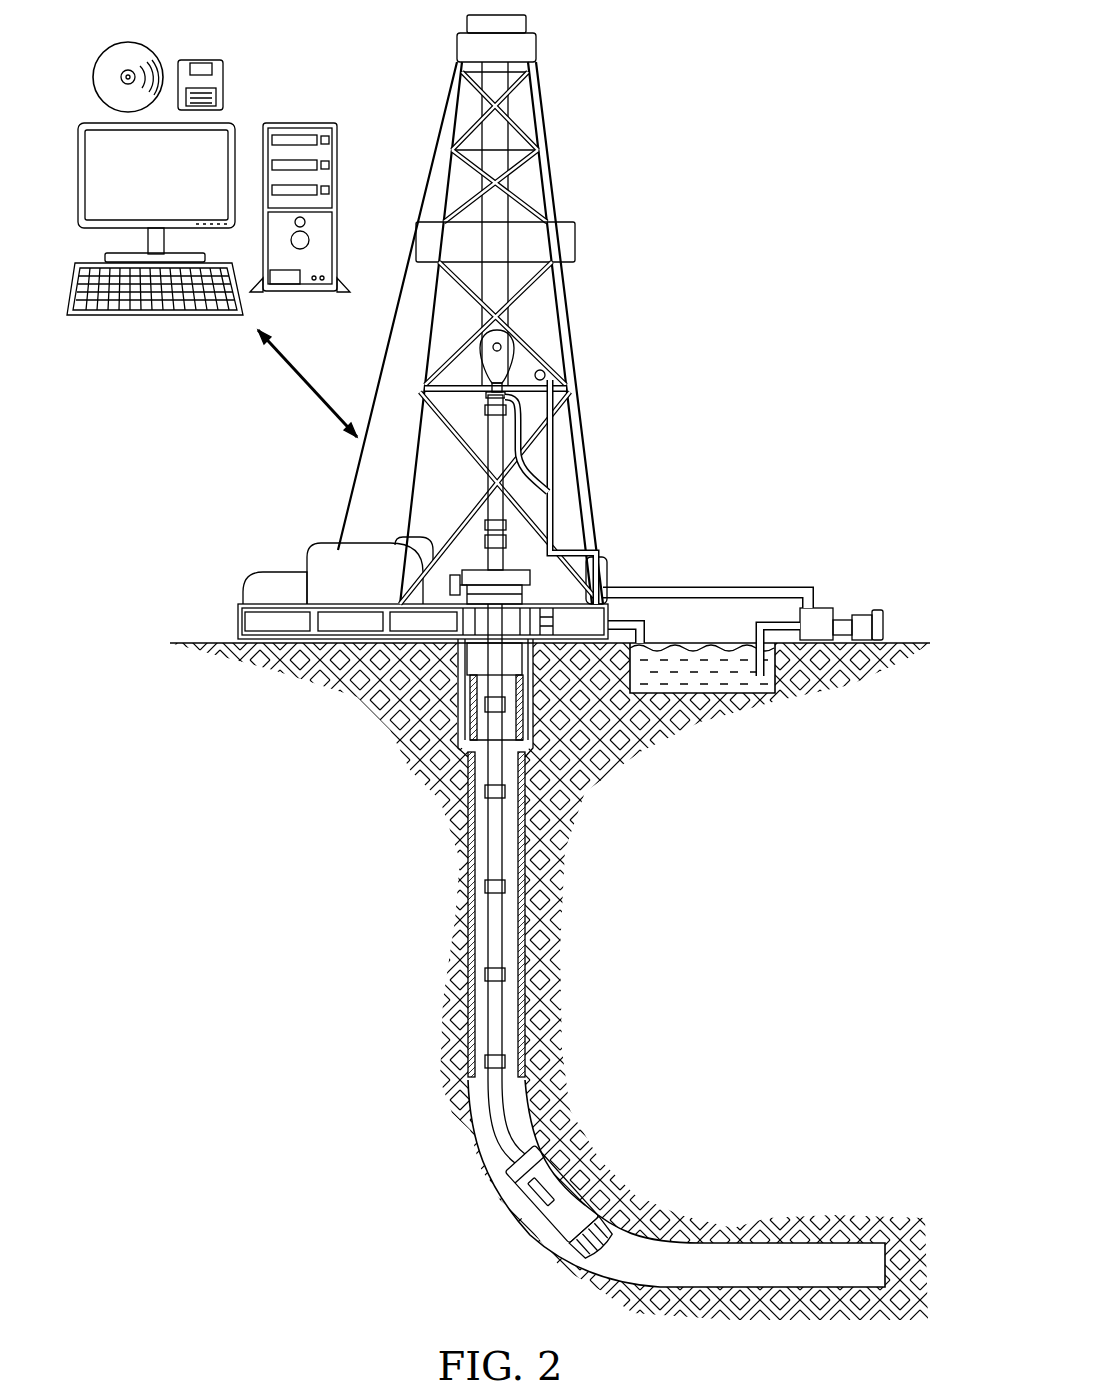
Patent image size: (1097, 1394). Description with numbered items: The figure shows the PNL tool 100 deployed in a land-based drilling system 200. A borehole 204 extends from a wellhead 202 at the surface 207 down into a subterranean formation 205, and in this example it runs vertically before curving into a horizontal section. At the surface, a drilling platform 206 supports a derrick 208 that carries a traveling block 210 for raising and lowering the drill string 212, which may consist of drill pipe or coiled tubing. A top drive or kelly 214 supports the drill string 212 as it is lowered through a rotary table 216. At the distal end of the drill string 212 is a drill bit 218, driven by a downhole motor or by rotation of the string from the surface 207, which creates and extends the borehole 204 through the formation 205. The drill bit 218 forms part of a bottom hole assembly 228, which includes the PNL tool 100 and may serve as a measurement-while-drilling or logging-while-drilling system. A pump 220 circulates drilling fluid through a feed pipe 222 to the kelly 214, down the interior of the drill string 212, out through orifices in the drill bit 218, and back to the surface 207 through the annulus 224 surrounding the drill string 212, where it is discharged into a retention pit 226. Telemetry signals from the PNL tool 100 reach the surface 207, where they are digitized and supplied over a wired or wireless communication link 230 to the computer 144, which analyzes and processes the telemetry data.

The PNL tool 100 is at (560, 1173).
The computer 144 is at (272, 87).
The drilling system 200 is at (776, 60).
The wellhead 202 is at (560, 588).
The borehole 204 is at (512, 928).
The subterranean formation 205 is at (768, 991).
The drilling platform 206 is at (238, 618).
The surface 207 is at (905, 642).
The derrick 208 is at (553, 190).
The traveling block 210 is at (481, 367).
The drill string 212 is at (505, 847).
The kelly 214 is at (487, 432).
The rotary table 216 is at (477, 568).
The drill bit 218 is at (612, 1248).
The pump 220 is at (820, 608).
The feed pipe 222 is at (700, 587).
The annulus 224 is at (466, 884).
The retention pit 226 is at (705, 694).
The bottom hole assembly 228 is at (503, 1192).
The communication link 230 is at (297, 383).